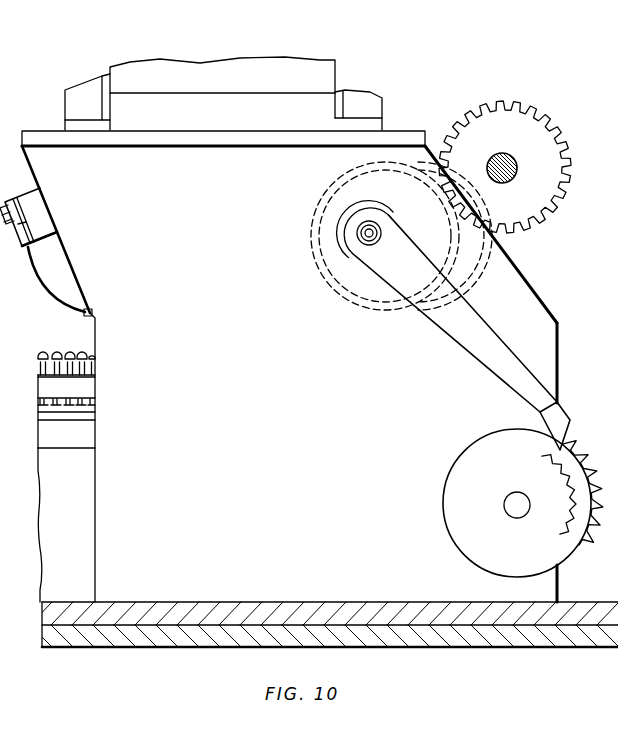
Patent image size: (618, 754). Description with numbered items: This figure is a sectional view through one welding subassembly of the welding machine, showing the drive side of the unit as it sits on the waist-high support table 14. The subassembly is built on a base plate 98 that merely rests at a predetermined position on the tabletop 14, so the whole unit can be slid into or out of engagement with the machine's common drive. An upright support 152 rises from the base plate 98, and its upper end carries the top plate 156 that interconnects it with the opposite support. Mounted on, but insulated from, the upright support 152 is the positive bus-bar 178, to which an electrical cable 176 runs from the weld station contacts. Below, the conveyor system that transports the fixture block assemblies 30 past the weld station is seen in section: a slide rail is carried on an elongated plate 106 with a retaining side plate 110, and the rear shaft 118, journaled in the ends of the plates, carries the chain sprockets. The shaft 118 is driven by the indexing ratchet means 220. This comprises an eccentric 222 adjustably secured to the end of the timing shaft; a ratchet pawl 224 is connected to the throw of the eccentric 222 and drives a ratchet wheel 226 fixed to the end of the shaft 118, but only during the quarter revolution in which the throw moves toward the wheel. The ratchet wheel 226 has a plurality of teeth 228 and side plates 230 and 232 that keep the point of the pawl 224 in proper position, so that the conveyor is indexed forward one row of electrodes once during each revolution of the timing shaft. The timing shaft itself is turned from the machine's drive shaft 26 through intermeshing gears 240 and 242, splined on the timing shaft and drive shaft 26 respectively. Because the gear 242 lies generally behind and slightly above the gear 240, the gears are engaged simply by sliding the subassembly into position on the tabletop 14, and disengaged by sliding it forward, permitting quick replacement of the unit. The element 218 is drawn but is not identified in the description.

The support table 14 is at (482, 639).
The drive shaft 26 is at (517, 168).
The fixture block assembly 30 is at (58, 342).
The base plate 98 is at (458, 603).
The elongated plate 106 is at (78, 537).
The retaining side plate 110 is at (84, 432).
The shaft 118 is at (510, 509).
The upright support 152 is at (268, 354).
The top plate 156 is at (392, 135).
The electrical cable 176 is at (42, 281).
The positive bus-bar 178 is at (28, 198).
The motor assembly 218 is at (190, 56).
The indexing ratchet means 220 is at (492, 311).
The eccentric 222 is at (337, 226).
The ratchet pawl 224 is at (456, 330).
The ratchet wheel 226 is at (464, 498).
The teeth 228 is at (582, 470).
The side plate 230 is at (572, 458).
The side plate 232 is at (556, 557).
The gear 240 is at (330, 197).
The gear 242 is at (556, 185).